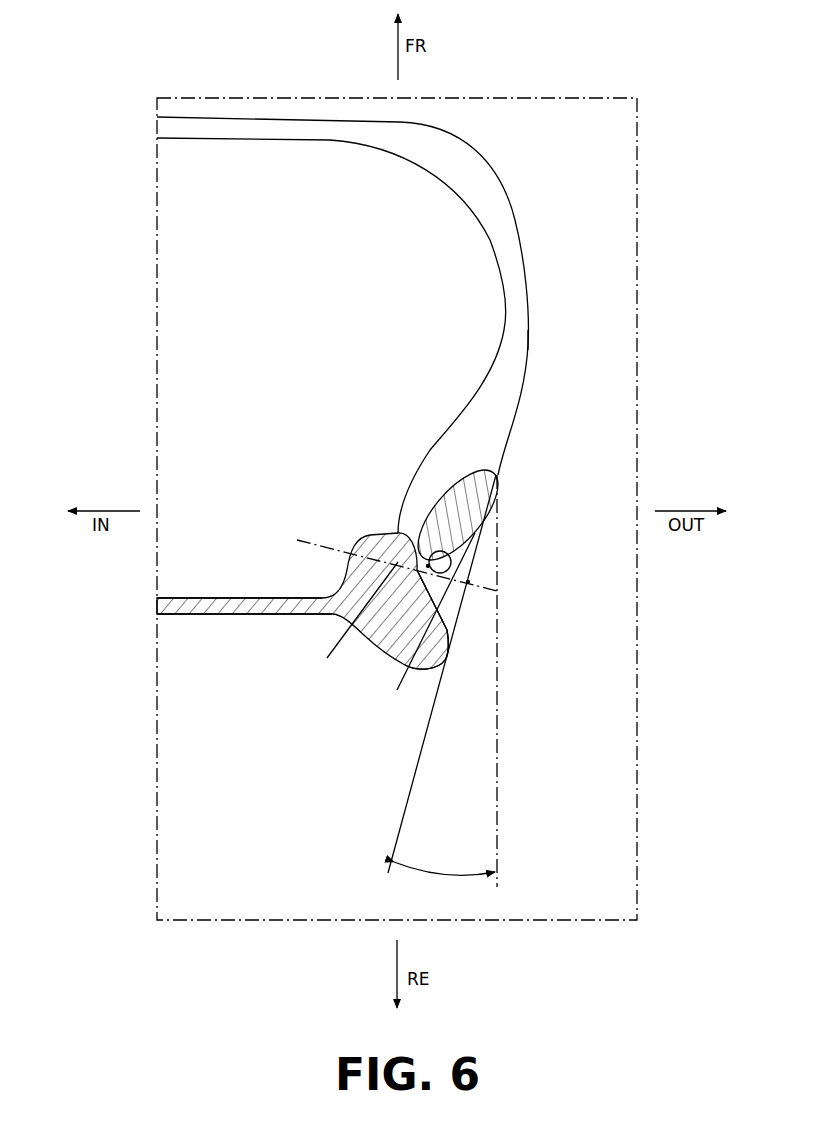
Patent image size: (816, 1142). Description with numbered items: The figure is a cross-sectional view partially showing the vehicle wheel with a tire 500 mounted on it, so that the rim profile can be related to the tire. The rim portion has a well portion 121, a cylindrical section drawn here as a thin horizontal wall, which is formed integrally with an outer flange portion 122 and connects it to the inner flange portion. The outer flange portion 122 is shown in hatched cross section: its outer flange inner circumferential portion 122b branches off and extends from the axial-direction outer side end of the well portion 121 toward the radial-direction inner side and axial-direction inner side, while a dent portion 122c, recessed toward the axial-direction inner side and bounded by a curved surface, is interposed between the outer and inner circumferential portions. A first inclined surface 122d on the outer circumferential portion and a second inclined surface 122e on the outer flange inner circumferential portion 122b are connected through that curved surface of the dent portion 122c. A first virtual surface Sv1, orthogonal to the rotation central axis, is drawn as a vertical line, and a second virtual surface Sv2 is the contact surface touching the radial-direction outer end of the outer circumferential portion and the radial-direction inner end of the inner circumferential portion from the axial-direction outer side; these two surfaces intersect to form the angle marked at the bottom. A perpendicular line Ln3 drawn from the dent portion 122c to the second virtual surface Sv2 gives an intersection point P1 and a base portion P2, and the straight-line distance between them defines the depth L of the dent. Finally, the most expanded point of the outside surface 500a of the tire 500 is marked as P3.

The tire 500 is at (514, 226).
The outside surface of the tire 500a is at (530, 278).
The most expanded point P3 is at (531, 340).
The outer flange portion 122 is at (449, 477).
The outer flange inner circumferential portion 122b is at (420, 663).
The dent portion 122c is at (410, 553).
The first inclined surface 122d is at (473, 543).
The second inclined surface 122e is at (446, 624).
The well portion 121 is at (213, 596).
The base portion P2 is at (427, 565).
The intersection point P1 is at (471, 581).
The perpendicular line Ln3 is at (302, 538).
The depth of the dent portion L is at (389, 659).
The second virtual surface Sv2 is at (434, 723).
The first virtual surface Sv1 is at (499, 805).